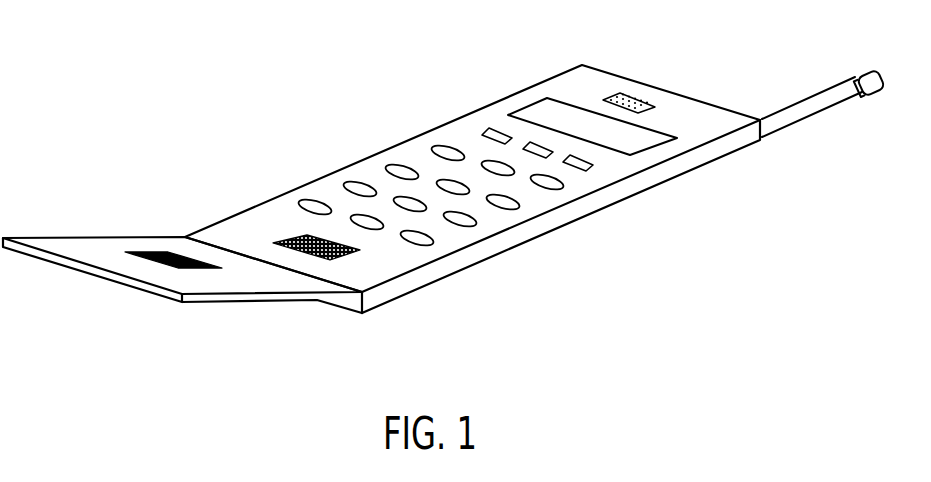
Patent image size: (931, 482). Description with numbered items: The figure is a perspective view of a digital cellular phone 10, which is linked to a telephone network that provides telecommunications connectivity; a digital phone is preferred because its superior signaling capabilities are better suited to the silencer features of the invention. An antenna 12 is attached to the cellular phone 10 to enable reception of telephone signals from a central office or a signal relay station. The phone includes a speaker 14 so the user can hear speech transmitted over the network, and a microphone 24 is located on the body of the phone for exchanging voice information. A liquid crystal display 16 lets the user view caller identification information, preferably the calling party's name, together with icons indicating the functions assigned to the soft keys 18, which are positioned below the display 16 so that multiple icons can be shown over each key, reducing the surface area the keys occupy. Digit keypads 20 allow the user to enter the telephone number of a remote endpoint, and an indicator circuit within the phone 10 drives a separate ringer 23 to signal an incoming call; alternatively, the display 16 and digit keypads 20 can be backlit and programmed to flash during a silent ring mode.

The digital cellular phone 10 is at (456, 312).
The antenna 12 is at (832, 98).
The speaker 14 is at (633, 98).
The liquid crystal display (LCD) 16 is at (565, 113).
The soft keys 18 is at (497, 130).
The digit keypads 20 is at (450, 148).
The ringer 23 is at (290, 236).
The microphone 24 is at (172, 252).